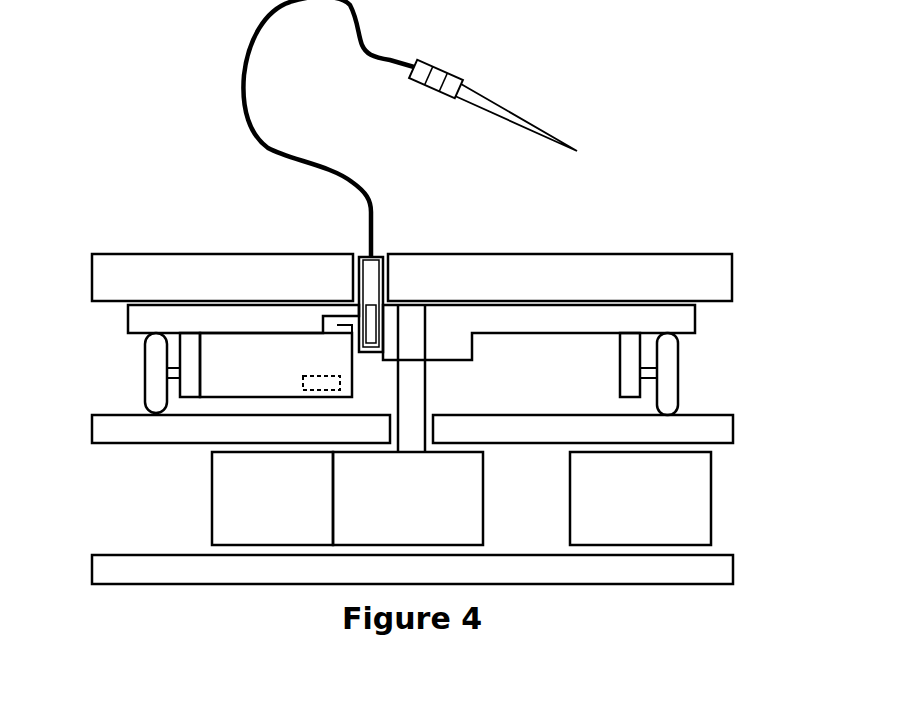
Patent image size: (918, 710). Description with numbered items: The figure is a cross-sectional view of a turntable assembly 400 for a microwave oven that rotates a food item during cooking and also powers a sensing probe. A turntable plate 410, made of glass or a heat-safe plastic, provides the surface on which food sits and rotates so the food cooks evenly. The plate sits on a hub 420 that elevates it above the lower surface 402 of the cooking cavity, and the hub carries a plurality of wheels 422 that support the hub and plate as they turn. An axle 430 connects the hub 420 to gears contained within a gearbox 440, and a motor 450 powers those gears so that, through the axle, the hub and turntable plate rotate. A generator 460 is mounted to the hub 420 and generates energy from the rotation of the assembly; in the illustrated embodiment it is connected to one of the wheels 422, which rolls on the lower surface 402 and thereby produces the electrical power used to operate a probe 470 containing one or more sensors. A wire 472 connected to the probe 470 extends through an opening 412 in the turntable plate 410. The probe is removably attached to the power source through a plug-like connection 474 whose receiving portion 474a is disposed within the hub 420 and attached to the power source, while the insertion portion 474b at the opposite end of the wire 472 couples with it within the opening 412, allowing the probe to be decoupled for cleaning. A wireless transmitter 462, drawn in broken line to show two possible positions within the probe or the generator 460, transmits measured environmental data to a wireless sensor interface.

The turntable assembly 400 is at (110, 188).
The lower surface 402 is at (713, 433).
The turntable plate 410 is at (667, 280).
The opening 412 is at (392, 258).
The hub 420 is at (667, 320).
The wheels 422 is at (740, 343).
The axle 430 is at (410, 313).
The gearbox 440 is at (387, 525).
The motor 450 is at (253, 525).
The generator 460 is at (250, 393).
The wireless transmitter 462 is at (440, 72).
The probe 470 is at (467, 85).
The wire 472 is at (252, 132).
The plug-like connection 474 is at (620, 536).
The receiving portion 474a is at (354, 295).
The insertion portion 474b is at (377, 260).